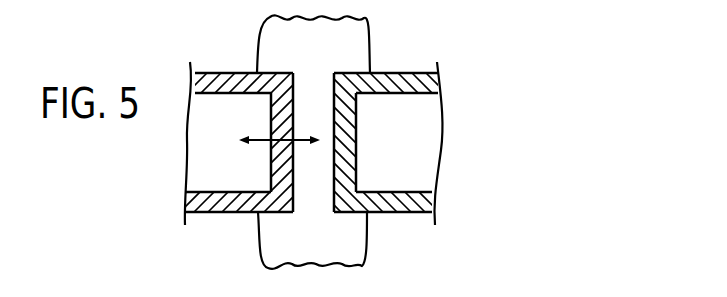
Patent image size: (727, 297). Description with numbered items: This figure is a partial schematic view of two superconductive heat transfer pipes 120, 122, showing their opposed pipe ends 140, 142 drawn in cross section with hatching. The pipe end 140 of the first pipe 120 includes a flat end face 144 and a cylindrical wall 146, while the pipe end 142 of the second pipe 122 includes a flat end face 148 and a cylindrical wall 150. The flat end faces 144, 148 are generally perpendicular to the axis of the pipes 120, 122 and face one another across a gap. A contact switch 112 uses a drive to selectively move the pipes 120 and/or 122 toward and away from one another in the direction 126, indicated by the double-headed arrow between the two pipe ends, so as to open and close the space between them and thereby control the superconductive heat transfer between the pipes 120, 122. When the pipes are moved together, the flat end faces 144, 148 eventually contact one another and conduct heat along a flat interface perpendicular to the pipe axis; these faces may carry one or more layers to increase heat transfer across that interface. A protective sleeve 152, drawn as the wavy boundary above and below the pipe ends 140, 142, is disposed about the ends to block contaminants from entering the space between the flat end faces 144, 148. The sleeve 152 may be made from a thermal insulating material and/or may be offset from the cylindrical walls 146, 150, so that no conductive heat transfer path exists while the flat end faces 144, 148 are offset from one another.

The contact switch 112 is at (232, 247).
The pipe 120 is at (184, 160).
The pipe 122 is at (441, 146).
The direction 126 is at (268, 142).
The pipe end 140 is at (242, 143).
The pipe end 142 is at (383, 146).
The flat end face 144 is at (297, 92).
The cylindrical wall 146 is at (232, 73).
The flat end face 148 is at (333, 206).
The cylindrical wall 150 is at (389, 73).
The protective sleeve 152 is at (363, 268).